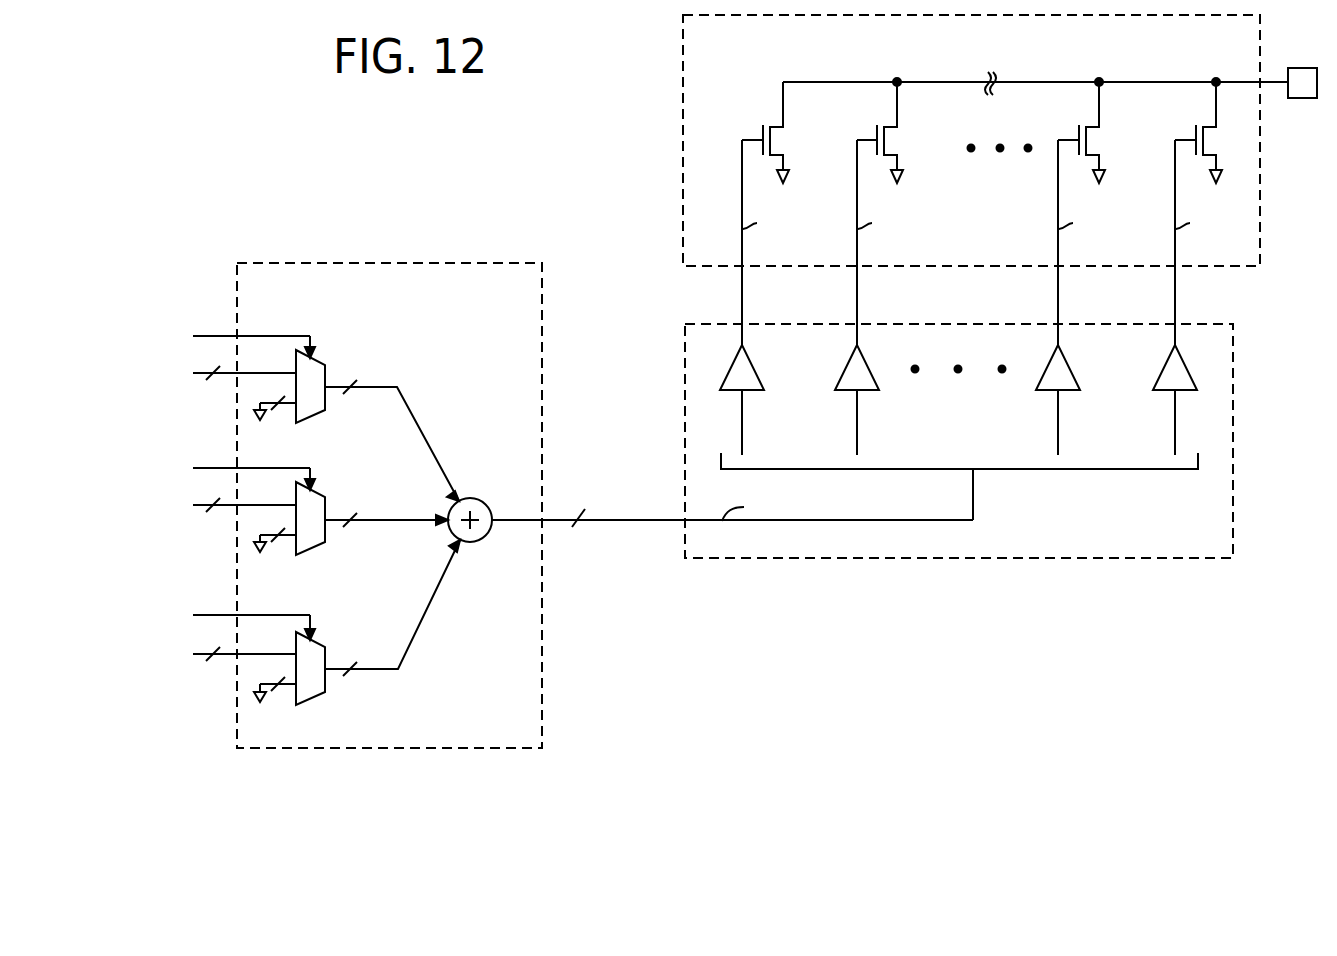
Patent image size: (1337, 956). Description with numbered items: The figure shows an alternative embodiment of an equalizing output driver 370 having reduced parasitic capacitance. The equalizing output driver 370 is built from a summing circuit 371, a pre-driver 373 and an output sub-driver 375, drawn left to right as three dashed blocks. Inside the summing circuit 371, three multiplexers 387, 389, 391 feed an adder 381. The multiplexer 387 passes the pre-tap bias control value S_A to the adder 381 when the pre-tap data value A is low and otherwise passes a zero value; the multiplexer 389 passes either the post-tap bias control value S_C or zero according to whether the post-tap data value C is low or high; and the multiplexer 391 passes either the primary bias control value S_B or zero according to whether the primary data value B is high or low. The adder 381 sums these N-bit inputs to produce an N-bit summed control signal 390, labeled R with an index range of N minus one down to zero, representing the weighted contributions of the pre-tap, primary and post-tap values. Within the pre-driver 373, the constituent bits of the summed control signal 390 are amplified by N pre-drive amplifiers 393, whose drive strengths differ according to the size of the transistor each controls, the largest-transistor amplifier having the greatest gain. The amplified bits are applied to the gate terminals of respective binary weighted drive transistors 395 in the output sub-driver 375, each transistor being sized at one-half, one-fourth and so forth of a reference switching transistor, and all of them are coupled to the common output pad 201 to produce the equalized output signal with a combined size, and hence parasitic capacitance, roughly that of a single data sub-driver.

The output pad 201 is at (1300, 98).
The equalizing output driver 370 is at (772, 699).
The summing circuit 371 is at (527, 305).
The pre-driver 373 is at (1220, 545).
The output sub-driver 375 is at (1008, 53).
The adder 381 is at (464, 499).
The multiplexer 387 is at (324, 362).
The multiplexer 389 is at (320, 494).
The summed control signal 390 is at (653, 519).
The multiplexer 391 is at (320, 698).
The pre-drive amplifiers 393 is at (749, 356).
The binary weighted drive transistors 395 is at (1211, 124).